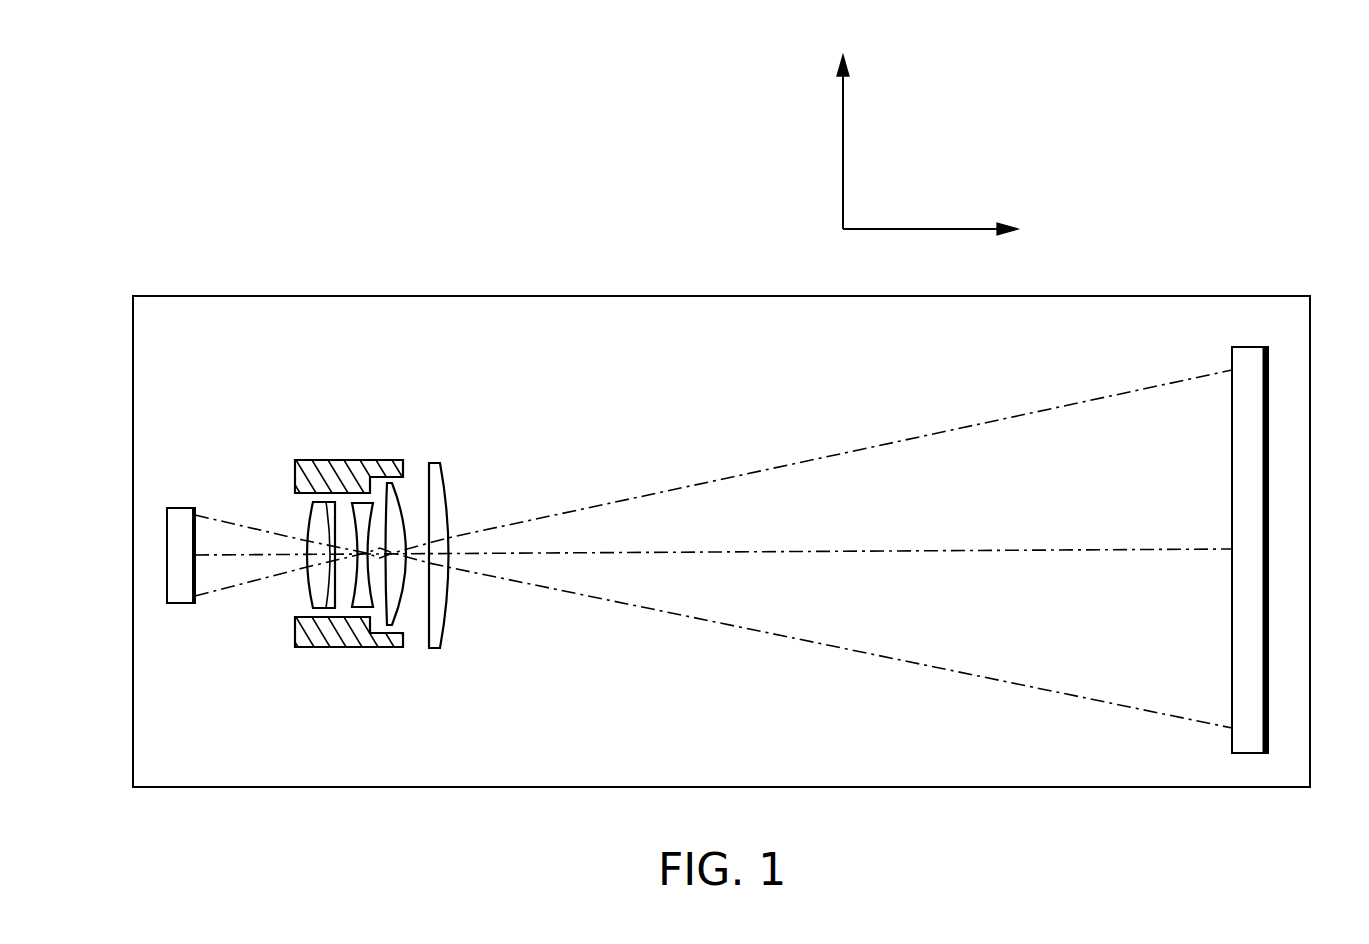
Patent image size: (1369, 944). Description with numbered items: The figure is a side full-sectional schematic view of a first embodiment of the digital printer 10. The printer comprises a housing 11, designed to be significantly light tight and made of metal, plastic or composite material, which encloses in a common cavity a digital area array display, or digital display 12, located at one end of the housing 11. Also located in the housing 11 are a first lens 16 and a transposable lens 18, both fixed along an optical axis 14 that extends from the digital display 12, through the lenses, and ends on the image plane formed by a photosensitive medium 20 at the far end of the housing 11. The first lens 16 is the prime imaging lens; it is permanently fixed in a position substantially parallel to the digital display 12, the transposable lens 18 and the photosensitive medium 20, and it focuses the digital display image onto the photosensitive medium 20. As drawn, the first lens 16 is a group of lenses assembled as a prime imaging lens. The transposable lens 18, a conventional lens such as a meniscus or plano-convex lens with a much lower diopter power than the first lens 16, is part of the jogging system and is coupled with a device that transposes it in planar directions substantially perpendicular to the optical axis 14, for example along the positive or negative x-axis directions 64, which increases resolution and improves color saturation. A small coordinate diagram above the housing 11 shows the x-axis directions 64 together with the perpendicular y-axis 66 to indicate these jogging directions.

The digital printer 10 is at (279, 222).
The housing 11 is at (133, 346).
The digital display 12 is at (167, 553).
The optical axis 14 is at (1123, 550).
The first lens 16 is at (291, 658).
The transposable lens 18 is at (450, 492).
The photosensitive medium 20 is at (1268, 420).
The x-axis directions 64 is at (923, 229).
The y-axis 66 is at (843, 137).